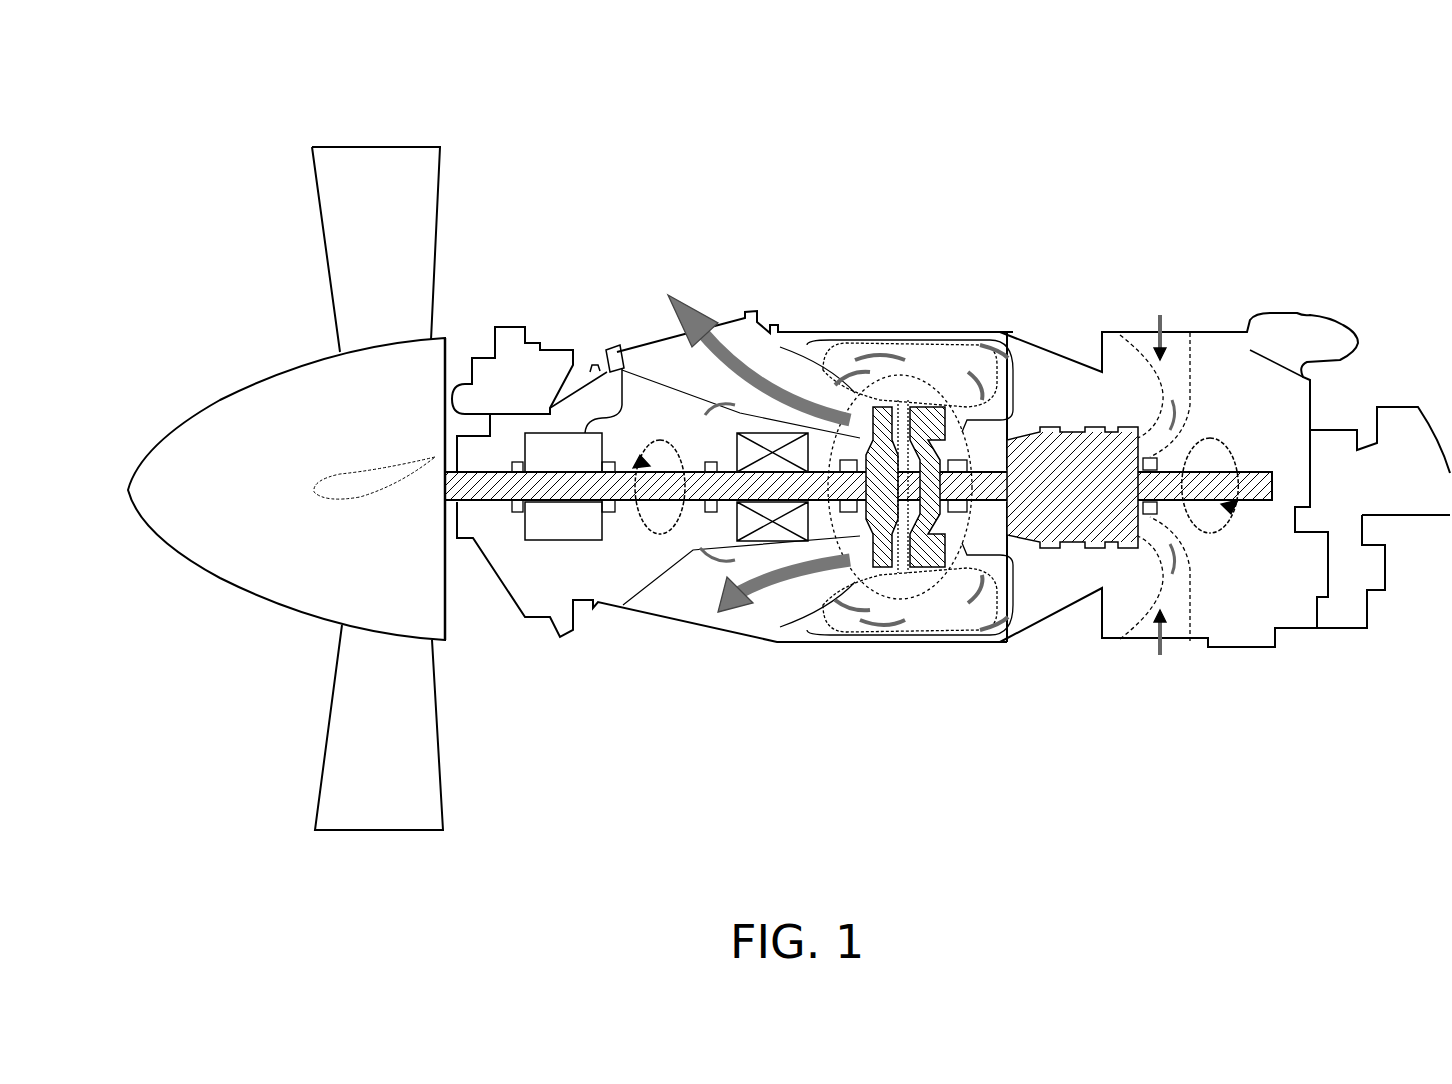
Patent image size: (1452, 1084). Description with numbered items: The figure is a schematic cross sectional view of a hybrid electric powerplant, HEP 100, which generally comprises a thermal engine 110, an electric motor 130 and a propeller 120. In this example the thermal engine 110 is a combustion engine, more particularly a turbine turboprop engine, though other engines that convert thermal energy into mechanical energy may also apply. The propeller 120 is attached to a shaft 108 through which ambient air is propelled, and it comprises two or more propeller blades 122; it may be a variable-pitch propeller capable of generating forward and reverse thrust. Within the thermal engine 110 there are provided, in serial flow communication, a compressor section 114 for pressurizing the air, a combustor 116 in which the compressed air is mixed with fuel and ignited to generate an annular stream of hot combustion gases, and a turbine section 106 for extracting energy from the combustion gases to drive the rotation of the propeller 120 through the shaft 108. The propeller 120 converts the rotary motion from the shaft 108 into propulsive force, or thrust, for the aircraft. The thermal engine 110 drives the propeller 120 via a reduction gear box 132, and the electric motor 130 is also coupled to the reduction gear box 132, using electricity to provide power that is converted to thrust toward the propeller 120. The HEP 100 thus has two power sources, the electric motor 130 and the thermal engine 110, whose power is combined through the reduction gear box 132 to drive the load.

The HEP 100 is at (1088, 92).
The turbine section 106 is at (900, 610).
The shaft 108 is at (487, 505).
The thermal engine 110 is at (1393, 290).
The compressor section 114 is at (1057, 548).
The combustor 116 is at (930, 365).
The propeller 120 is at (440, 137).
The propeller blades 122 is at (415, 202).
The electric motor 130 is at (688, 540).
The reduction gear box 132 is at (614, 352).